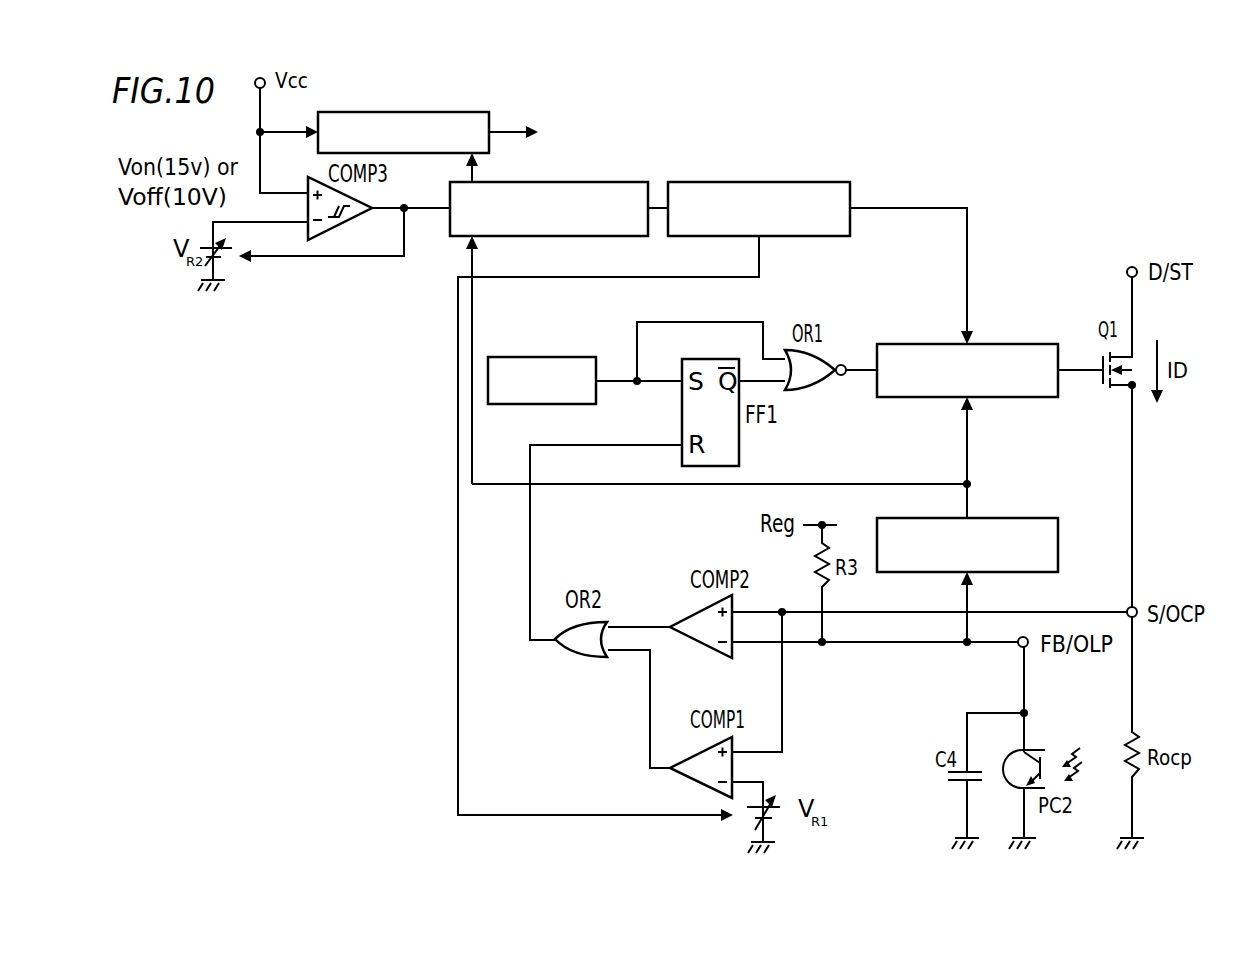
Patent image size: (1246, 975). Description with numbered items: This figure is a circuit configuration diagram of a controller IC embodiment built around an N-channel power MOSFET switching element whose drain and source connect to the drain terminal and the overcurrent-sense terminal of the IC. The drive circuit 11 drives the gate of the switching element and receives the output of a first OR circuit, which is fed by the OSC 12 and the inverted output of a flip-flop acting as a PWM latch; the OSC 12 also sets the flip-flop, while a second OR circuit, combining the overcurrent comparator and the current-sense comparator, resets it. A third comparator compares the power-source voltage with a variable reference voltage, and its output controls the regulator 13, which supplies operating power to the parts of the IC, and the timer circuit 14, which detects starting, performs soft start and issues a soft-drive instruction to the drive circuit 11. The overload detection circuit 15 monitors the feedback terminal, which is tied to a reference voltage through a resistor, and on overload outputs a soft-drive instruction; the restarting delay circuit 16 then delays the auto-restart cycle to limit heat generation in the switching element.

The drive circuit 11 is at (998, 342).
The OSC 12 is at (570, 357).
The regulator 13 is at (447, 110).
The timer circuit 14 is at (822, 180).
The overload detection circuit 15 is at (1017, 517).
The restarting delay circuit 16 is at (612, 180).